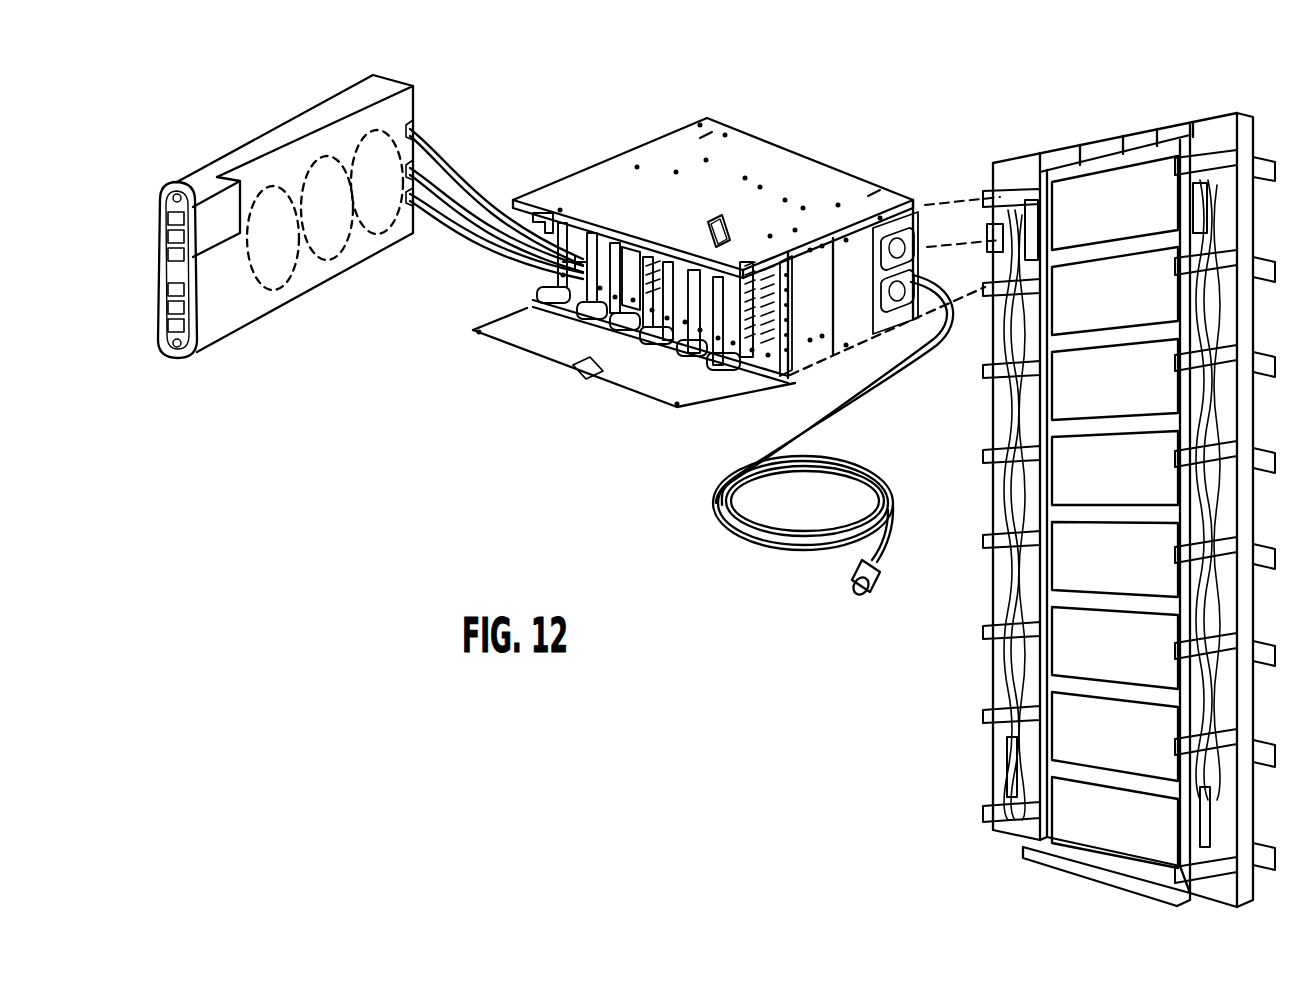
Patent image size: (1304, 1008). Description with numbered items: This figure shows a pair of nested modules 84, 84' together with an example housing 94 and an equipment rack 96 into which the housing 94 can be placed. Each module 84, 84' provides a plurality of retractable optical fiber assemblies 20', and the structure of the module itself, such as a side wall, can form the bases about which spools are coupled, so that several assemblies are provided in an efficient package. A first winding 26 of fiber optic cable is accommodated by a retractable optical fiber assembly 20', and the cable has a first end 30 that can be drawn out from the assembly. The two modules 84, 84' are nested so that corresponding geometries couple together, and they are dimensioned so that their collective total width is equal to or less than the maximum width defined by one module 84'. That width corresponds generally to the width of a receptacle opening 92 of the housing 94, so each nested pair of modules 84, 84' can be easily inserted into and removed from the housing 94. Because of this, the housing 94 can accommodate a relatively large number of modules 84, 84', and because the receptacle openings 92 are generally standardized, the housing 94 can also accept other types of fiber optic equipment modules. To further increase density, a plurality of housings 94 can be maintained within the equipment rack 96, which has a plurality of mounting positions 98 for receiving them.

The module 84 is at (285, 216).
The module 84' is at (528, 374).
The retractable optical fiber assembly 20' is at (327, 255).
The first winding 26 is at (440, 195).
The first end 30 is at (874, 568).
The receptacle opening 92 is at (547, 287).
The housing 94 is at (778, 142).
The equipment rack 96 is at (1071, 104).
The mounting position 98 is at (1122, 213).